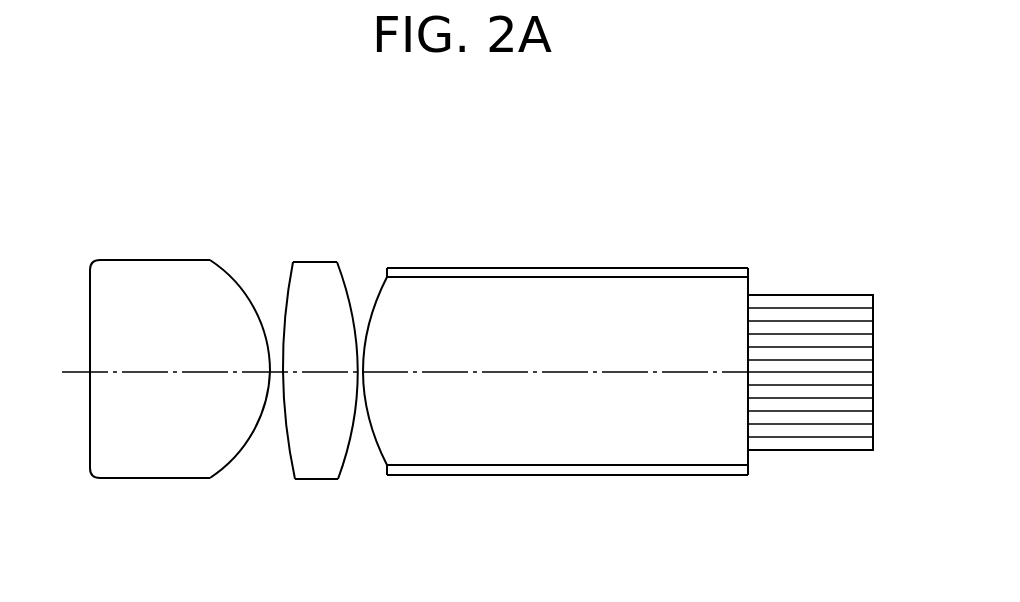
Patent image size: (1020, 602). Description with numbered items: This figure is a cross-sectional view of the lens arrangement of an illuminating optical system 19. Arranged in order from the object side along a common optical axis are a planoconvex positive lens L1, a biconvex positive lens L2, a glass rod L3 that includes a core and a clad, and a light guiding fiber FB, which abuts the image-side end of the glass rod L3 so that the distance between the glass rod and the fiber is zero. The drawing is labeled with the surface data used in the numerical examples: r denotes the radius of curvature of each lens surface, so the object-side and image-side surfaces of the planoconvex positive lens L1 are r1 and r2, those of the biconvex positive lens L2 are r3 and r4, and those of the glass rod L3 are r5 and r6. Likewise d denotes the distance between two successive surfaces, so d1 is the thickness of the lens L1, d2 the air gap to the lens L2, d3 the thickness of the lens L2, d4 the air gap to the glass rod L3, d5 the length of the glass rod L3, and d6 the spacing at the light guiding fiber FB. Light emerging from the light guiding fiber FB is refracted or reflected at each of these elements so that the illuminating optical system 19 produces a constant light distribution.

The illuminating optical system 19 is at (444, 182).
The planoconvex positive lens L1 is at (153, 260).
The biconvex positive lens L2 is at (311, 261).
The third lens L3 is at (548, 268).
The light guiding fiber FB is at (813, 295).
The object-side surface of first lens r1 is at (88, 303).
The image-side surface of first lens r2 is at (230, 273).
The object-side surface of second lens r3 is at (289, 288).
The image-side surface of second lens r4 is at (343, 277).
The object-side surface of third lens r5 is at (372, 277).
The image-side surface of third lens r6 is at (747, 303).
The thickness of first lens d1 is at (152, 374).
The air gap between first and second lens d2 is at (272, 374).
The thickness of second lens d3 is at (313, 374).
The air gap between second and third lens d4 is at (360, 374).
The thickness of third lens d5 is at (545, 374).
The distance from third lens to fiber bundle d6 is at (747, 374).